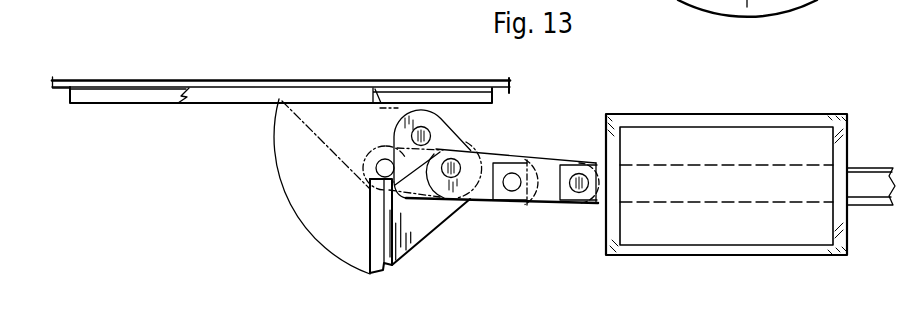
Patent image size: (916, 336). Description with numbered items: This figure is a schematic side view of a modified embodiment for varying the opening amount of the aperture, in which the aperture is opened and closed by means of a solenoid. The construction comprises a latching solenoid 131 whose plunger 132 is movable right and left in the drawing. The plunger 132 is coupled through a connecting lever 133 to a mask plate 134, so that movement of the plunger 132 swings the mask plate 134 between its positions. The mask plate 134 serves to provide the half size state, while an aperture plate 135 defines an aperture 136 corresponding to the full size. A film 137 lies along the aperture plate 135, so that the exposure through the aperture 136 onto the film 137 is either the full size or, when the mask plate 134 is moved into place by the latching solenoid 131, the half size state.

The latching solenoid 131 is at (700, 252).
The plunger 132 is at (870, 205).
The connecting lever 133 is at (570, 207).
The mask plate 134 is at (383, 273).
The aperture plate 135 is at (140, 97).
The aperture 136 is at (230, 100).
The film 137 is at (242, 80).